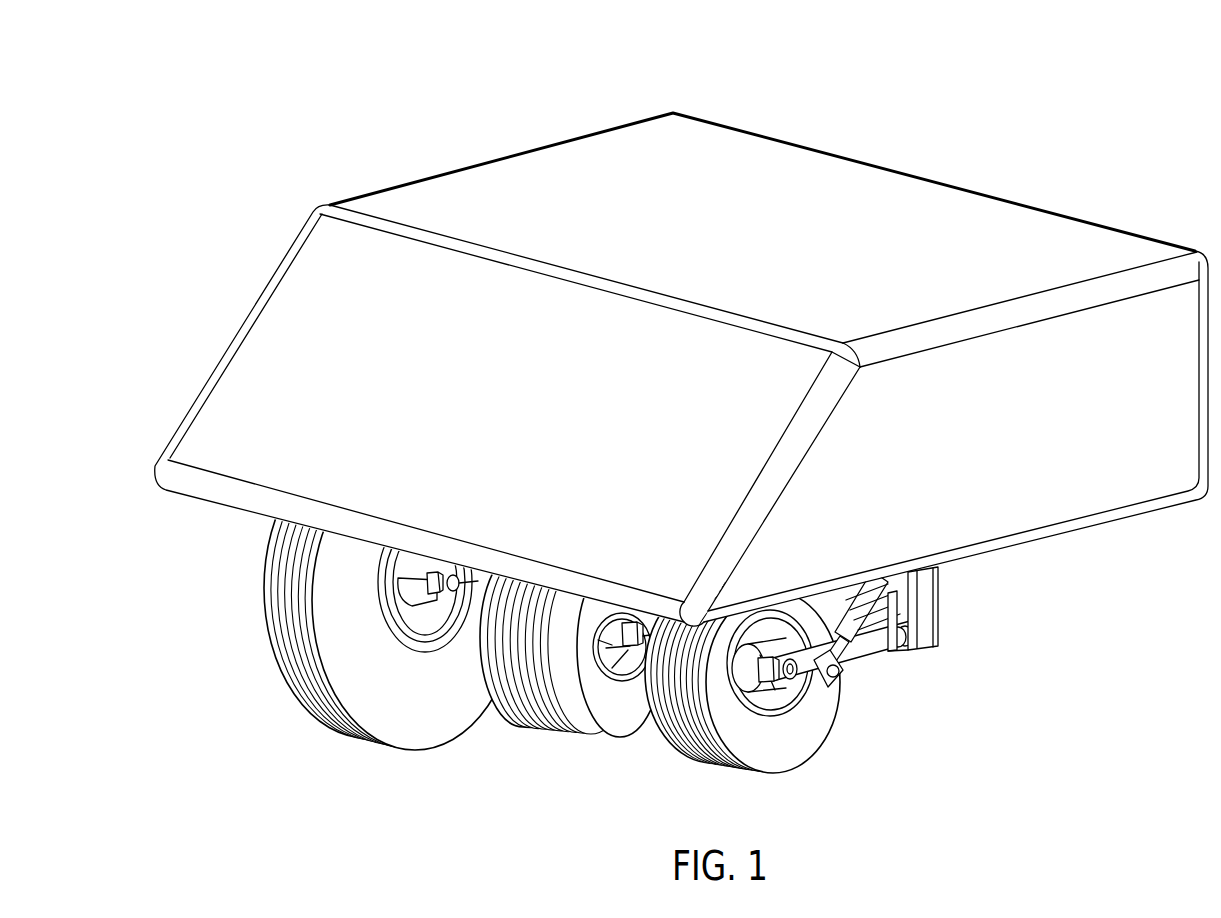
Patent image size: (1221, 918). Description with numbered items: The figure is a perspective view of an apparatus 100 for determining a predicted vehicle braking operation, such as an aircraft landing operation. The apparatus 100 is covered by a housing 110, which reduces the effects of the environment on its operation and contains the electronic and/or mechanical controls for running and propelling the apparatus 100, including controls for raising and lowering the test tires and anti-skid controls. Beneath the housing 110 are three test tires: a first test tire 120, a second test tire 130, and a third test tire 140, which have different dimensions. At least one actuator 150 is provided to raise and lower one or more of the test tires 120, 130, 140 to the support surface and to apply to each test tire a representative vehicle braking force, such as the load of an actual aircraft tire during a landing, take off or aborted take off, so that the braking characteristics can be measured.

The apparatus 100 is at (681, 436).
The housing 110 is at (473, 160).
The first test tire 120 is at (280, 755).
The second test tire 130 is at (520, 753).
The third test tire 140 is at (678, 782).
The actuator 150 is at (853, 627).